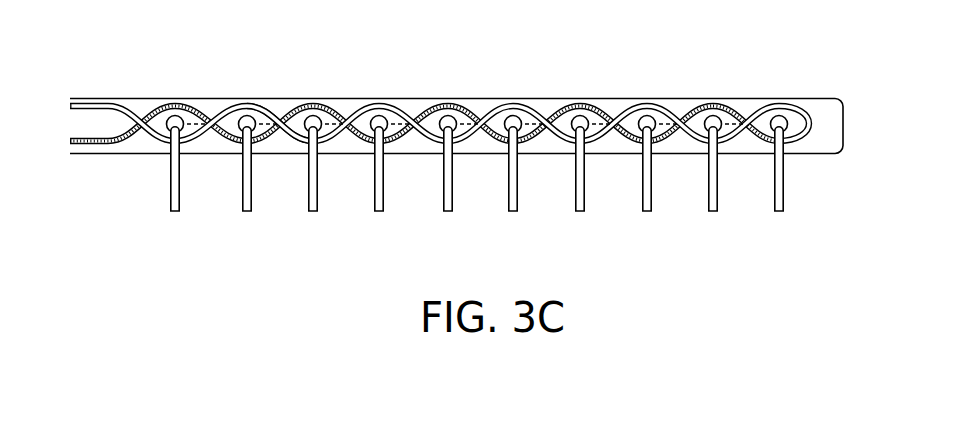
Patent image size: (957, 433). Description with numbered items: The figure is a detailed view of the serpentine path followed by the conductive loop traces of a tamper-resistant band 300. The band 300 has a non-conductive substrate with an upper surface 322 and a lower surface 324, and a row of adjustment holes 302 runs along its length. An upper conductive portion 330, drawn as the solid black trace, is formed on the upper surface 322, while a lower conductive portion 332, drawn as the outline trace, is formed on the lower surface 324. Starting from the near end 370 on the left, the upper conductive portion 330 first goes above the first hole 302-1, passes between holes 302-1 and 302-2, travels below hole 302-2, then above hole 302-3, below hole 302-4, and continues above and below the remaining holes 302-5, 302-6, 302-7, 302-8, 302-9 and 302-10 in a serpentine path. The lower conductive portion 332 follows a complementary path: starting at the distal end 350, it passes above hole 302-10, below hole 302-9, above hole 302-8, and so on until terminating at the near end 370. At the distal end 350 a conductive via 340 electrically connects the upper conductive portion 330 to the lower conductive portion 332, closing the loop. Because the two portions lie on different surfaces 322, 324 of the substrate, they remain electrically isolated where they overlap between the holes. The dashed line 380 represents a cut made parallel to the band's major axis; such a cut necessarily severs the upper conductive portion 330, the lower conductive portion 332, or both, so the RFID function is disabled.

The band 300 is at (177, 105).
The adjustment holes 302 is at (248, 114).
The first hole 302-1 is at (167, 184).
The second hole 302-2 is at (247, 212).
The third hole 302-3 is at (304, 184).
The fourth hole 302-4 is at (379, 212).
The fifth hole 302-5 is at (442, 184).
The sixth hole 302-6 is at (513, 212).
The seventh hole 302-7 is at (582, 184).
The eighth hole 302-8 is at (654, 184).
The ninth hole 302-9 is at (731, 184).
The tenth hole 302-10 is at (811, 184).
The upper surface 322 is at (754, 112).
The lower surface 324 is at (757, 152).
The upper conductive portion 330 is at (416, 121).
The lower conductive portion 332 is at (96, 108).
The via 340 is at (808, 128).
The distal end 350 is at (836, 134).
The near end 370 is at (116, 128).
The dashed line 380 is at (286, 138).